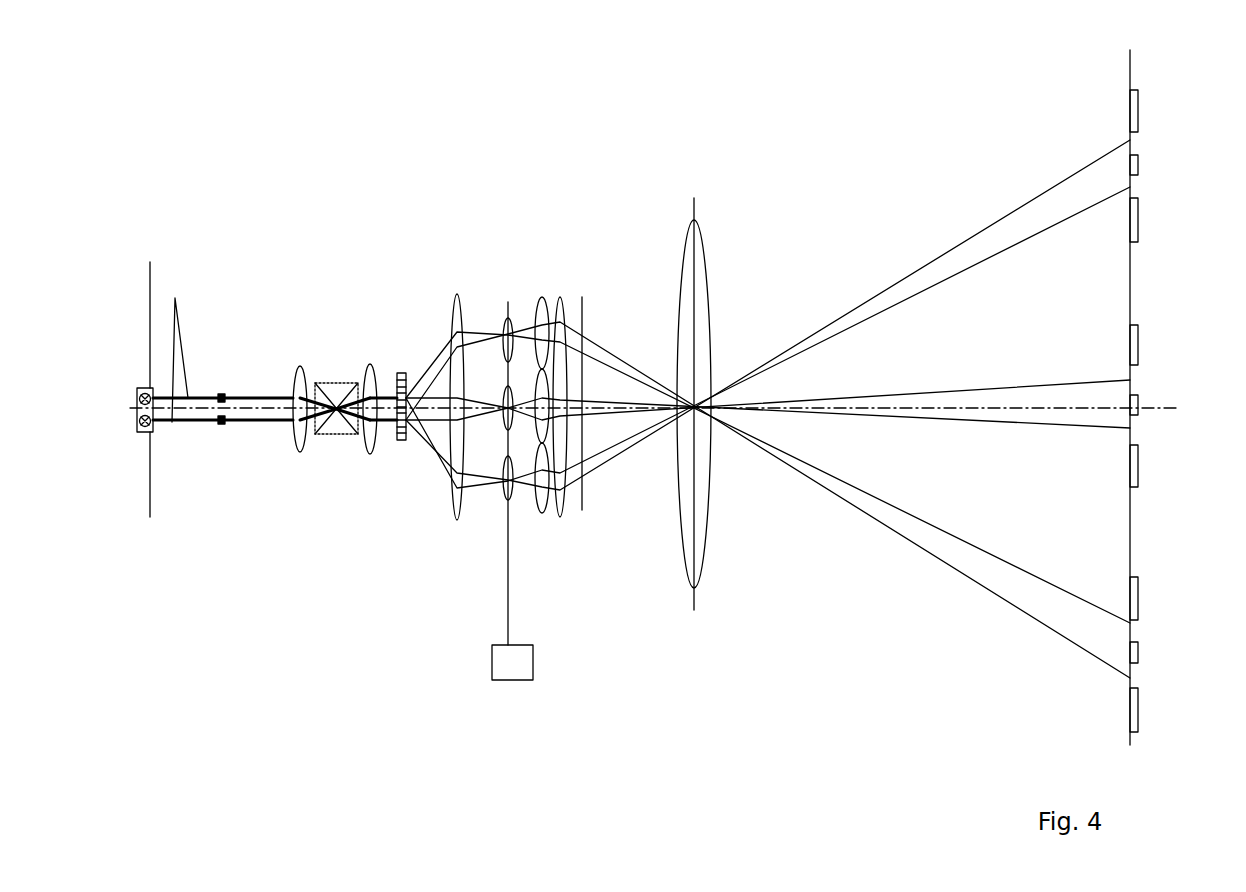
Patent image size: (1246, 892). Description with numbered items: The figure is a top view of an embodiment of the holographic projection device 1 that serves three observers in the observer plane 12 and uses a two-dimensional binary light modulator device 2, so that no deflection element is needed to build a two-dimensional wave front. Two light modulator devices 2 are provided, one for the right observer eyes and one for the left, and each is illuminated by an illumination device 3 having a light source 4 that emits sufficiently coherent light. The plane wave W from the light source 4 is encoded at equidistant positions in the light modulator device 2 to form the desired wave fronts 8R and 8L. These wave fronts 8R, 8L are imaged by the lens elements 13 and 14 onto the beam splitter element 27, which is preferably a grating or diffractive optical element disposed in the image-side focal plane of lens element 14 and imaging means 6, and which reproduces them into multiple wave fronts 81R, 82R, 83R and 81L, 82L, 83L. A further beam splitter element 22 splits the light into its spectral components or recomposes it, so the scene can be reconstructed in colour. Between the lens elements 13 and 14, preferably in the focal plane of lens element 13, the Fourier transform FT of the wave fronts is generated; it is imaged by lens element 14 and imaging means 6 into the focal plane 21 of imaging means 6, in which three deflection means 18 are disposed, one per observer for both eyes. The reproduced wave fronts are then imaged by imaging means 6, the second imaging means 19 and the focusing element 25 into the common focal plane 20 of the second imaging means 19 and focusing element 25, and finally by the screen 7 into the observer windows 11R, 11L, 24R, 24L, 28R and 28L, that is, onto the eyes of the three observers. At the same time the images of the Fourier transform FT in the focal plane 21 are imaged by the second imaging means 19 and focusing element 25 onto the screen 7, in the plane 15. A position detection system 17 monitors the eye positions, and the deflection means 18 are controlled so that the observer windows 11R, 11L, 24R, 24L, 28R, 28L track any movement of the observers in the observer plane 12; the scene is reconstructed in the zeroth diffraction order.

The holographic projection device 1 is at (408, 142).
The light modulator device 2 is at (218, 394).
The illumination device 3 is at (142, 385).
The light source 4 is at (148, 386).
The plane wave W is at (174, 344).
The wave front for right observer eyes 8R is at (247, 396).
The wave front for left observer eyes 8L is at (251, 423).
The lens element 13 is at (300, 366).
The beam splitter element 22 is at (331, 383).
The Fourier transform FT is at (333, 416).
The lens element 14 is at (369, 364).
The beam splitter element 27 is at (398, 438).
The reproduced wave front 81R is at (412, 397).
The reproduced wave front 81L is at (430, 386).
The reproduced wave front 82R is at (410, 430).
The reproduced wave front 82L is at (417, 421).
The reproduced wave front 83R is at (432, 443).
The reproduced wave front 83L is at (443, 457).
The imaging means 6 is at (456, 521).
The deflection means 18 is at (508, 300).
The position detection system 17 is at (512, 662).
The focal plane 21 is at (512, 503).
The focusing element 25 is at (541, 297).
The second imaging means 19 is at (558, 519).
The common focal plane 20 is at (582, 508).
The screen 7 is at (688, 245).
The plane 15 is at (695, 602).
The observer plane 12 is at (1130, 708).
The observer window 11R is at (1135, 143).
The observer window 11L is at (1135, 182).
The observer window 28R is at (1137, 372).
The observer window 28L is at (1137, 422).
The observer window 24R is at (1138, 630).
The observer window 24L is at (1138, 672).